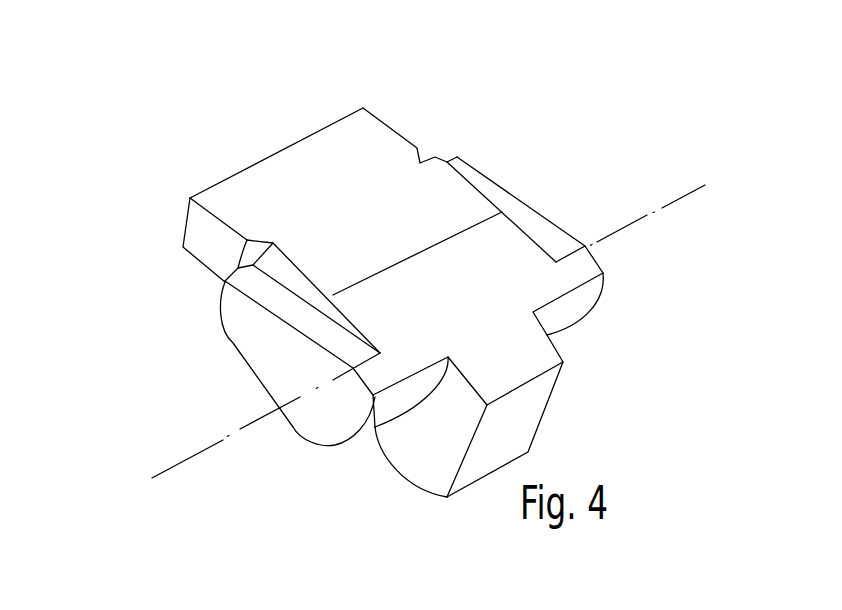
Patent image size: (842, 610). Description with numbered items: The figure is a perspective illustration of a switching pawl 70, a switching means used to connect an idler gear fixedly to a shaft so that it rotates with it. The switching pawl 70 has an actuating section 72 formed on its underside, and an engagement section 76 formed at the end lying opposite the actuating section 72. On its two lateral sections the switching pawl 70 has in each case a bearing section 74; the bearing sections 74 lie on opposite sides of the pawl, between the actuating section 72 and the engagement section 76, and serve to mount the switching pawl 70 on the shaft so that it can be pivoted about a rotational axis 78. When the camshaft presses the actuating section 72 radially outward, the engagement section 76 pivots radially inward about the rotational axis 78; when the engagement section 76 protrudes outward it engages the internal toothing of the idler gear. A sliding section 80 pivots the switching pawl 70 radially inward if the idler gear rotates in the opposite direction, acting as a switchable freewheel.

The switching pawl 70 is at (455, 208).
The actuating section 72 is at (430, 457).
The bearing section 74 is at (288, 416).
The engagement section 76 is at (283, 148).
The rotational axis 78 is at (192, 452).
The sliding section 80 is at (377, 152).